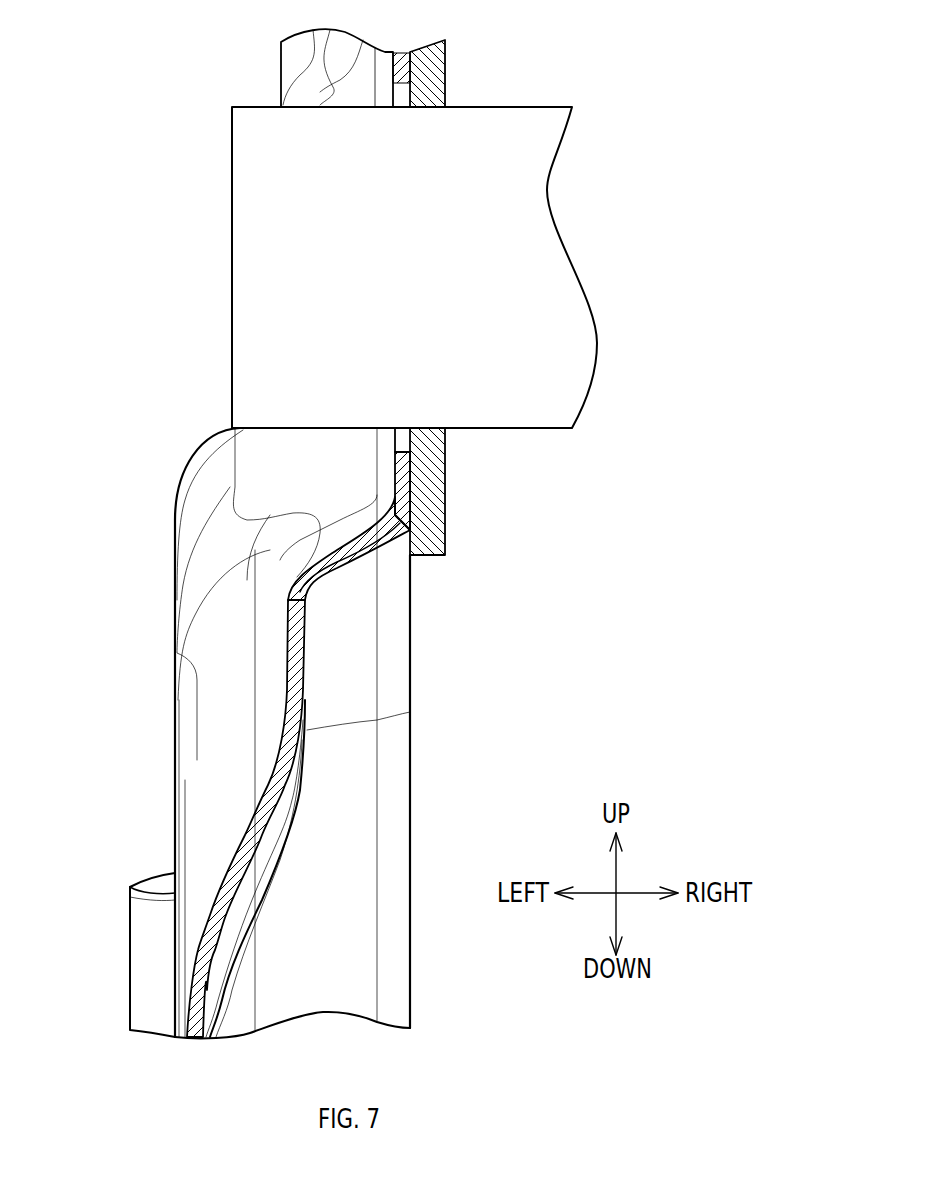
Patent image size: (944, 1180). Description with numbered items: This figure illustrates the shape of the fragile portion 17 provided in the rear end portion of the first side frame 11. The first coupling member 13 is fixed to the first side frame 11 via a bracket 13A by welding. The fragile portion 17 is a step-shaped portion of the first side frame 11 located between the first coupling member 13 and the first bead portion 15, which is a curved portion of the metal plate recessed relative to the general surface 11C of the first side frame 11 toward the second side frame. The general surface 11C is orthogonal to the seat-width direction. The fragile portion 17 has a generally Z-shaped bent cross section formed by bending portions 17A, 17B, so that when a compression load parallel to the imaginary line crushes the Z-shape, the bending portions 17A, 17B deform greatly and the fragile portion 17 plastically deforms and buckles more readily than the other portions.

The first side frame 11 is at (410, 743).
The general surface 11C is at (175, 622).
The first coupling member 13 is at (507, 107).
The bracket 13A is at (445, 498).
The first bead portion 15 is at (265, 722).
The fragile portion 17 is at (340, 530).
The bending portion 17A is at (318, 597).
The bending portion 17B is at (390, 548).